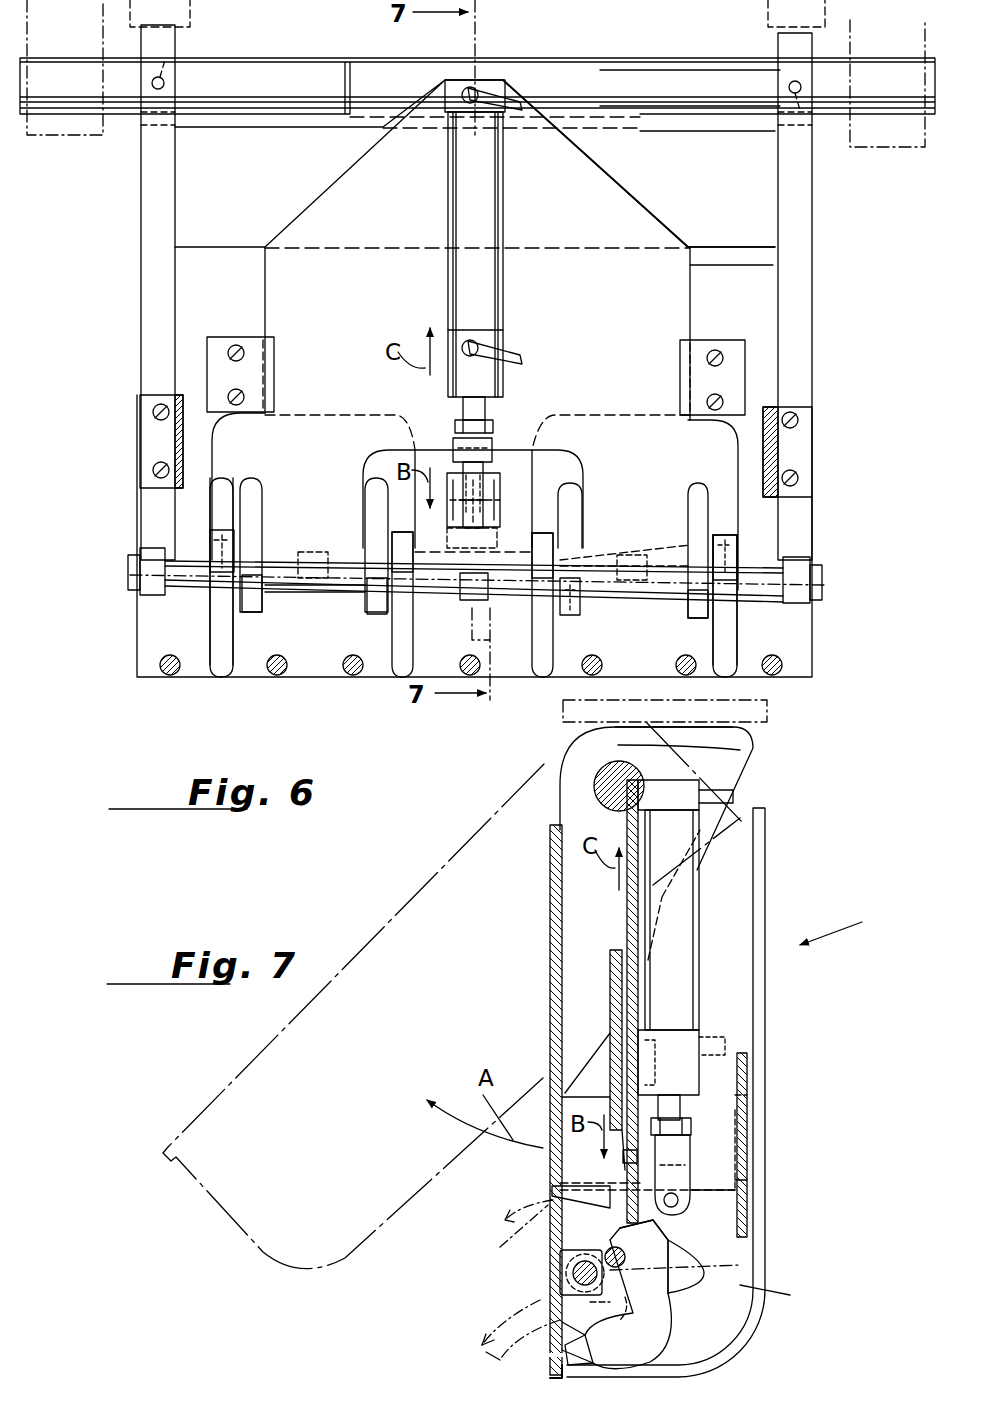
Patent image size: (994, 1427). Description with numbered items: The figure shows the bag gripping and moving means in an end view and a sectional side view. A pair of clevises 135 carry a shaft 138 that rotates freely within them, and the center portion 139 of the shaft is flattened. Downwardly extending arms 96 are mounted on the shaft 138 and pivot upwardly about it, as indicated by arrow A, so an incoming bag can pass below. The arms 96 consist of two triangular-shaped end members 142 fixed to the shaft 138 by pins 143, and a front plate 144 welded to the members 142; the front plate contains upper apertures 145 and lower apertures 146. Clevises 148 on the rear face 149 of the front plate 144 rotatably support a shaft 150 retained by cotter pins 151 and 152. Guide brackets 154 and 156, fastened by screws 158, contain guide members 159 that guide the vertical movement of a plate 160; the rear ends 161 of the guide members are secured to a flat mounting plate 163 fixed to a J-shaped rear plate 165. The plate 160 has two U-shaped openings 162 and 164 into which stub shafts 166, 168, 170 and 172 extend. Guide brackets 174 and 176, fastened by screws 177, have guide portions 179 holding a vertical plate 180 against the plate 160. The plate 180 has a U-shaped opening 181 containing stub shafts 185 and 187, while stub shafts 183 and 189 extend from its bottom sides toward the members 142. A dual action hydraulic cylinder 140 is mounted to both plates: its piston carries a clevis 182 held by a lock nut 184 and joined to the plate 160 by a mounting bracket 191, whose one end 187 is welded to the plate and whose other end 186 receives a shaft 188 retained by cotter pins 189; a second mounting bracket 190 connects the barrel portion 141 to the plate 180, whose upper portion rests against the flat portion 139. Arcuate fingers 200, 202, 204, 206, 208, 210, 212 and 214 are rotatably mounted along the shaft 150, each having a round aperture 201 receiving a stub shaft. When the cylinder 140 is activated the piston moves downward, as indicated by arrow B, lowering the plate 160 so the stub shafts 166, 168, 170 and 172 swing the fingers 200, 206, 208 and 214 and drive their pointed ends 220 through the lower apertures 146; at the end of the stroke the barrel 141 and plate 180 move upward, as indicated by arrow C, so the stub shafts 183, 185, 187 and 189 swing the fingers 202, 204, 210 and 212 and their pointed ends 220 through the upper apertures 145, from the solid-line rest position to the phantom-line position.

In FIG. 7, the downwardly extending arms 96 is at (842, 922).
In FIG. 6, the clevises 135 is at (65, 150).
In FIG. 6, the shaft 138 is at (680, 80).
In FIG. 7, the shaft 138 is at (600, 780).
In FIG. 6, the center portion of shaft 139 is at (560, 72).
In FIG. 7, the center portion of shaft 139 is at (655, 770).
In FIG. 6, the dual action hydraulic cylinder 140 is at (470, 190).
In FIG. 7, the dual action hydraulic cylinder 140 is at (680, 840).
In FIG. 7, the barrel portion 141 is at (680, 1040).
In FIG. 6, the triangular-shaped end members 142 is at (152, 225).
In FIG. 7, the triangular-shaped end members 142 is at (755, 748).
In FIG. 6, the pins 143 is at (168, 50).
In FIG. 6, the front plate 144 is at (258, 188).
In FIG. 7, the front plate 144 is at (550, 855).
In FIG. 6, the upper apertures 145 is at (480, 408).
In FIG. 7, the upper apertures 145 is at (552, 1193).
In FIG. 6, the lower apertures 146 is at (222, 678).
In FIG. 7, the lower apertures 146 is at (560, 1330).
In FIG. 6, the clevises 148 is at (150, 595).
In FIG. 7, the clevises 148 is at (560, 1275).
In FIG. 7, the rear face 149 is at (562, 1230).
In FIG. 6, the shaft 150 is at (195, 585).
In FIG. 7, the shaft 150 is at (575, 1270).
In FIG. 6, the cotter pin 151 is at (128, 565).
In FIG. 6, the cotter pin 152 is at (824, 568).
In FIG. 6, the guide bracket 154 is at (150, 412).
In FIG. 6, the guide bracket 156 is at (805, 487).
In FIG. 6, the screws 158 is at (155, 468).
In FIG. 6, the guide members 159 is at (175, 395).
In FIG. 7, the guide members 159 is at (740, 1130).
In FIG. 6, the plate 160 is at (750, 270).
In FIG. 7, the plate 160 is at (610, 975).
In FIG. 7, the rear ends 161 is at (745, 1095).
In FIG. 6, the U-shaped opening 162 is at (216, 441).
In FIG. 7, the flat mounting plate 163 is at (745, 1060).
In FIG. 6, the U-shaped opening 164 is at (737, 440).
In FIG. 6, the J-shaped rear plate 165 is at (160, 665).
In FIG. 7, the J-shaped rear plate 165 is at (765, 882).
In FIG. 6, the stub shaft 166 is at (222, 528).
In FIG. 6, the stub shaft 168 is at (362, 525).
In FIG. 6, the stub shaft 170 is at (560, 555).
In FIG. 7, the stub shaft 170 is at (720, 1280).
In FIG. 6, the stub shaft 172 is at (730, 545).
In FIG. 6, the guide bracket 174 is at (255, 337).
In FIG. 6, the guide bracket 176 is at (745, 358).
In FIG. 6, the screws 177 is at (236, 390).
In FIG. 6, the guide portions 179 is at (270, 370).
In FIG. 6, the vertical plate 180 is at (600, 185).
In FIG. 7, the vertical plate 180 is at (627, 905).
In FIG. 6, the U-shaped opening 181 is at (578, 450).
In FIG. 6, the clevis 182 is at (490, 455).
In FIG. 6, the stub shaft 183 is at (250, 615).
In FIG. 6, the lock nut 184 is at (456, 425).
In FIG. 7, the lock nut 184 is at (690, 1125).
In FIG. 6, the stub shaft 185 is at (370, 615).
In FIG. 7, the other end of bracket 186 is at (675, 1207).
In FIG. 6, the stub shaft 187 is at (500, 483).
In FIG. 7, the stub shaft 187 is at (650, 1290).
In FIG. 6, the shaft 188 is at (480, 525).
In FIG. 7, the shaft 188 is at (690, 1180).
In FIG. 6, the stub shaft 189 is at (452, 510).
In FIG. 7, the stub shaft 189 is at (700, 1197).
In FIG. 7, the second mounting bracket 190 is at (680, 985).
In FIG. 6, the mounting bracket 191 is at (505, 500).
In FIG. 7, the mounting bracket 191 is at (665, 1235).
In FIG. 6, the arcuate finger 200 is at (215, 635).
In FIG. 7, the aperture 201 is at (742, 1265).
In FIG. 6, the arcuate finger 202 is at (258, 530).
In FIG. 6, the arcuate finger 204 is at (345, 555).
In FIG. 6, the arcuate finger 206 is at (410, 630).
In FIG. 6, the arcuate finger 208 is at (535, 615).
In FIG. 7, the arcuate finger 208 is at (660, 1320).
In FIG. 6, the arcuate finger 210 is at (575, 555).
In FIG. 7, the arcuate finger 210 is at (580, 1190).
In FIG. 6, the arcuate finger 212 is at (690, 538).
In FIG. 6, the arcuate finger 214 is at (735, 615).
In FIG. 7, the pointed end 220 is at (550, 1362).